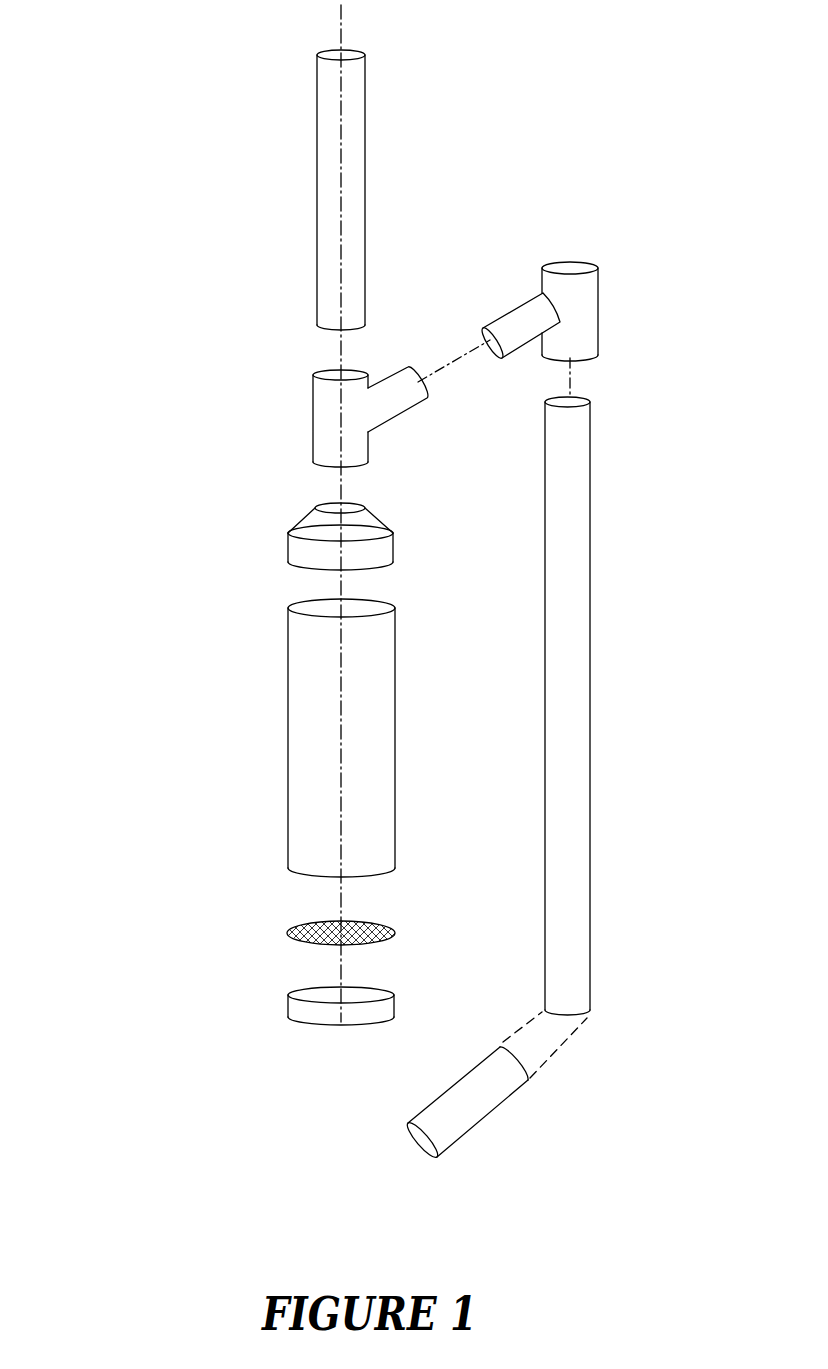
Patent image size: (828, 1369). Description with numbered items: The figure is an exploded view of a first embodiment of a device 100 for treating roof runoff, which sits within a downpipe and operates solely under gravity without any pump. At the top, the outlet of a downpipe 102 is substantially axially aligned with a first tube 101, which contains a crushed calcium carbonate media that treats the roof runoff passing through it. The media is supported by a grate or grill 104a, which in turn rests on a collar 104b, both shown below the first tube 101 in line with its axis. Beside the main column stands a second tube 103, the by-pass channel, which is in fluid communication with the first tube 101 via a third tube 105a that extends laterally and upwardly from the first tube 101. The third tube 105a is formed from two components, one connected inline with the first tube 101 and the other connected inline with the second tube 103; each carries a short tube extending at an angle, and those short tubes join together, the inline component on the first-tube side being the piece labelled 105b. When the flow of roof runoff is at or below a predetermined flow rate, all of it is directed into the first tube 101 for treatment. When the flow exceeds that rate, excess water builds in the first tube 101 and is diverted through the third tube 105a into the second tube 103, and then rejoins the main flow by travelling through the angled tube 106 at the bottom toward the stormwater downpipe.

The device for treating roof runoff 100 is at (155, 440).
The first tube 101 is at (308, 733).
The downpipe 102 is at (330, 203).
The second tube 103 is at (572, 635).
The grate or grill 104a is at (303, 930).
The collar 104b is at (298, 1012).
The third tube 105a is at (513, 318).
The angled connector 105b is at (325, 403).
The tube 106 is at (463, 1130).